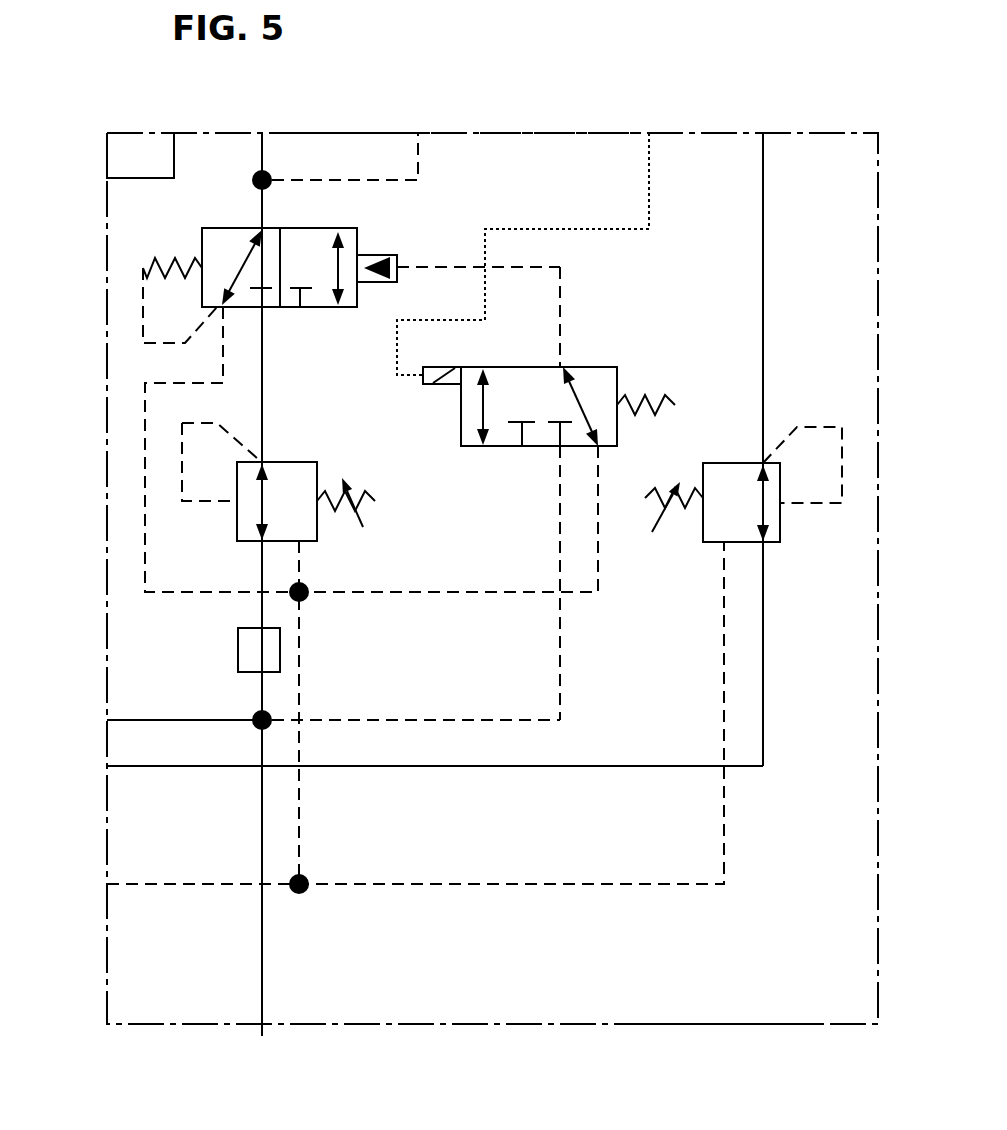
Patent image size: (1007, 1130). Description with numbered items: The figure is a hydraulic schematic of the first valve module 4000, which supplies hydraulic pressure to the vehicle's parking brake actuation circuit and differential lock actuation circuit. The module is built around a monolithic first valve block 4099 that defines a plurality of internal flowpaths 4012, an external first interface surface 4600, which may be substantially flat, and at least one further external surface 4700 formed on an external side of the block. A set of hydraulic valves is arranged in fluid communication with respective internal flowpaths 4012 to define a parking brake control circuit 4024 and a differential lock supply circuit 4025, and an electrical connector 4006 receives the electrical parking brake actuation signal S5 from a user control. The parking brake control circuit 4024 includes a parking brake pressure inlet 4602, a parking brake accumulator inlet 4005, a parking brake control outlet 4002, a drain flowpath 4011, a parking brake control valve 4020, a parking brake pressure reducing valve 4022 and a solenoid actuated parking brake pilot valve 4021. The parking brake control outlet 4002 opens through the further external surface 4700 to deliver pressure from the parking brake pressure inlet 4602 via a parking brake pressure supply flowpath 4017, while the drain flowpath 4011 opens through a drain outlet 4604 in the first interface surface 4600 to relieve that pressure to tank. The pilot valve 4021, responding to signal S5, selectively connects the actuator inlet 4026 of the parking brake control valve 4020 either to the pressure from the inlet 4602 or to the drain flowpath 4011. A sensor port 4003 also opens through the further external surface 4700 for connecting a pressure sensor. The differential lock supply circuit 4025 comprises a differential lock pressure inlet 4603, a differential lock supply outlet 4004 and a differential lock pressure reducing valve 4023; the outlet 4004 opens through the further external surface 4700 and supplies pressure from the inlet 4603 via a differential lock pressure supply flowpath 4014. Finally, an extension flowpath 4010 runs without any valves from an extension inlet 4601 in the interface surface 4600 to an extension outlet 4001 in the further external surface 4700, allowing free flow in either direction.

The first valve module 4000 is at (749, 49).
The extension outlet 4001 is at (175, 133).
The parking brake control outlet 4002 is at (263, 133).
The sensor port 4003 is at (418, 133).
The differential lock supply outlet 4004 is at (763, 133).
The parking brake accumulator inlet 4005 is at (262, 1024).
The electrical connector 4006 is at (649, 133).
The extension flowpath 4010 is at (148, 180).
The drain flowpath 4011 is at (212, 884).
The internal flowpaths 4012 is at (703, 940).
The differential lock pressure supply flowpath 4014 is at (372, 766).
The parking brake pressure supply flowpath 4017 is at (132, 718).
The parking brake control valve 4020 is at (316, 325).
The solenoid actuated parking brake pilot valve 4021 is at (613, 351).
The parking brake pressure reducing valve 4022 is at (313, 452).
The differential lock pressure reducing valve 4023 is at (697, 560).
The parking brake control circuit 4024 is at (632, 274).
The differential lock supply circuit 4025 is at (710, 399).
The actuator inlet 4026 is at (428, 240).
The first valve block 4099 is at (545, 133).
The first interface surface 4600 is at (107, 592).
The extension inlet 4601 is at (107, 178).
The parking brake pressure inlet 4602 is at (107, 720).
The differential lock pressure inlet 4603 is at (107, 766).
The drain outlet 4604 is at (107, 884).
The further external surface 4700 is at (363, 133).
The electrical parking brake actuation signal S5 is at (564, 229).